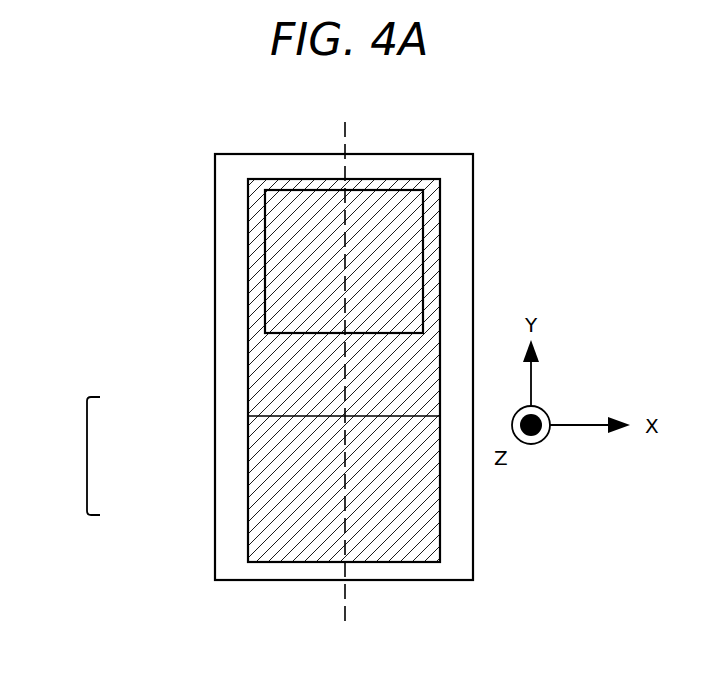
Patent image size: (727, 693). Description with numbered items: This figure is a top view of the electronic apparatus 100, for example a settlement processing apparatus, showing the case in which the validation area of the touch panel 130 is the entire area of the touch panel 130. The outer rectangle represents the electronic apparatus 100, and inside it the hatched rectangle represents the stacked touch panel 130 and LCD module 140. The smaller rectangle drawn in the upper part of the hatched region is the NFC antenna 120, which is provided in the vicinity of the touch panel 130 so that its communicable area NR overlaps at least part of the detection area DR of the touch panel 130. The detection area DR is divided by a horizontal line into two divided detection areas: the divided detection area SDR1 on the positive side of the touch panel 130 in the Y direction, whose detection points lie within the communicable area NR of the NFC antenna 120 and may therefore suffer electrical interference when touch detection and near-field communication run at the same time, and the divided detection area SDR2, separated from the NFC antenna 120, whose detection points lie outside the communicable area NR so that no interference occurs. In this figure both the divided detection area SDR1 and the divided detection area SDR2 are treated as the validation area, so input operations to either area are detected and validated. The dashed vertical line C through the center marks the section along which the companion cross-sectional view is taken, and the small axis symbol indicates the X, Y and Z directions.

The electronic apparatus 100 is at (440, 155).
The NFC antenna 120 is at (423, 300).
The touch panel 130 is at (363, 366).
The LCD module 140 is at (440, 250).
The communicable area NR is at (307, 349).
The divided detection area SDR1 is at (265, 365).
The divided detection area SDR2 is at (265, 450).
The detection area DR is at (87, 457).
The line C-C' C is at (347, 370).